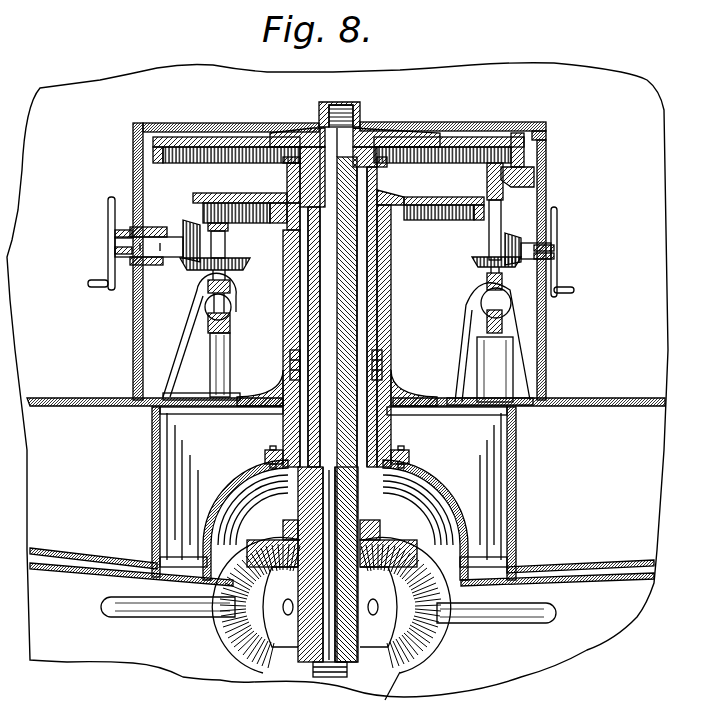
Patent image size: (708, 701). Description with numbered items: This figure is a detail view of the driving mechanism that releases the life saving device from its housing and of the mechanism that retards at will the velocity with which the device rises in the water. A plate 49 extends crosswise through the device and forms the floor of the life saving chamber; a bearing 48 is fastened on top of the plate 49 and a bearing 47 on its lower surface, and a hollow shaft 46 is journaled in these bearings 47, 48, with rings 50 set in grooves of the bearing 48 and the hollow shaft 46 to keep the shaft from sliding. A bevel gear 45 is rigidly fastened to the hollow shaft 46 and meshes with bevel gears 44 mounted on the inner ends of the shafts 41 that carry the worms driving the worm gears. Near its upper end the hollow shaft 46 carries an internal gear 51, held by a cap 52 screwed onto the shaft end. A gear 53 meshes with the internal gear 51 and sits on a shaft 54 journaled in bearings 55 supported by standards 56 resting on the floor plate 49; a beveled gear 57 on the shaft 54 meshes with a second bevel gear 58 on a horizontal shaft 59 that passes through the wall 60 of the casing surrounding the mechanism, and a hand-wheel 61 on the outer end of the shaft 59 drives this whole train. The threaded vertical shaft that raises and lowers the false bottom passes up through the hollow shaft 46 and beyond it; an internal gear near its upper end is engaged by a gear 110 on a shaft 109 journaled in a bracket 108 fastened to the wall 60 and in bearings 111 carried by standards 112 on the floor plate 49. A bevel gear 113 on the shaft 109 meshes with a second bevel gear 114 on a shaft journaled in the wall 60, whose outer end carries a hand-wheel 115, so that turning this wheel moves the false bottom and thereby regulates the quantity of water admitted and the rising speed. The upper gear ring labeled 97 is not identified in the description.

The shaft 41 is at (104, 612).
The bevel gear 44 is at (237, 641).
The bevel gear 45 is at (391, 553).
The hollow shaft 46 is at (378, 502).
The bearing 47 is at (392, 426).
The bearing 48 is at (387, 328).
The plate 49 is at (441, 398).
The rings 50 is at (388, 275).
The internal gear 51 is at (487, 198).
The cap 52 is at (381, 178).
The gear 53 is at (216, 212).
The shaft 54 is at (226, 240).
The bearings 55 is at (228, 313).
The standards 56 is at (223, 390).
The beveled gear 57 is at (240, 266).
The second bevel gear 58 is at (180, 257).
The horizontal shaft 59 is at (143, 245).
The wall 60 is at (133, 306).
The hand-wheel 61 is at (113, 259).
The gear ring 97 is at (153, 156).
The bracket 108 is at (533, 181).
The shaft 109 is at (488, 233).
The gear 110 is at (500, 160).
The bearings 111 is at (505, 323).
The standards 112 is at (517, 360).
The bevel gear 113 is at (482, 262).
The second bevel gear 114 is at (518, 240).
The hand-wheel 115 is at (555, 264).